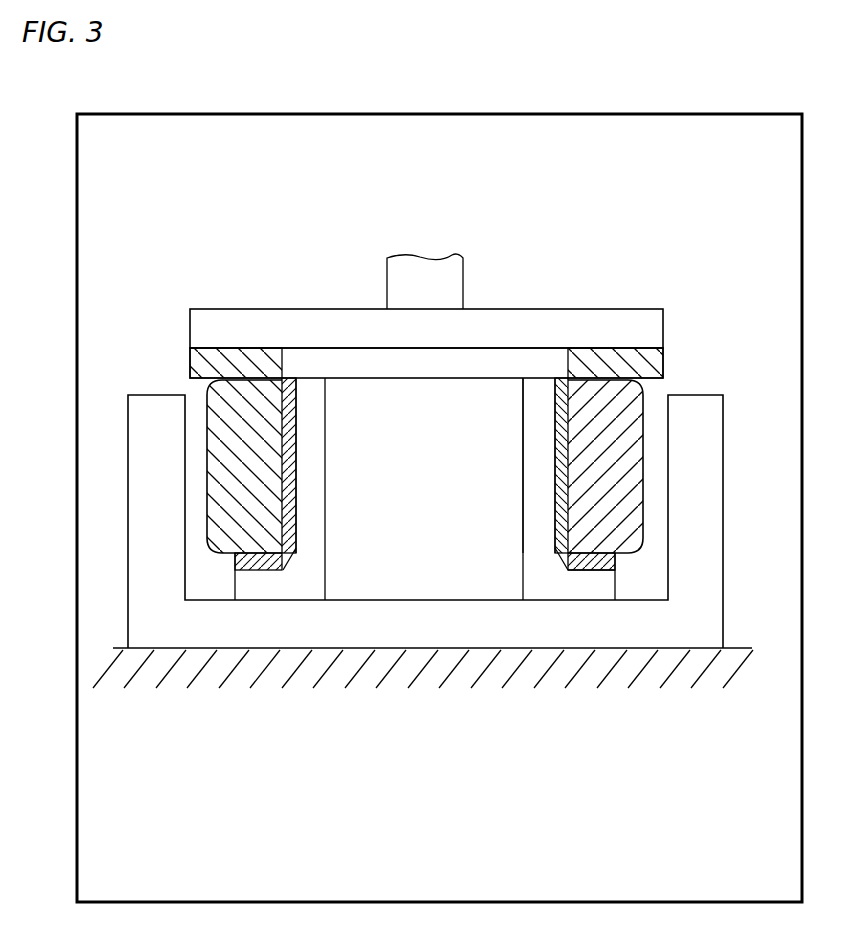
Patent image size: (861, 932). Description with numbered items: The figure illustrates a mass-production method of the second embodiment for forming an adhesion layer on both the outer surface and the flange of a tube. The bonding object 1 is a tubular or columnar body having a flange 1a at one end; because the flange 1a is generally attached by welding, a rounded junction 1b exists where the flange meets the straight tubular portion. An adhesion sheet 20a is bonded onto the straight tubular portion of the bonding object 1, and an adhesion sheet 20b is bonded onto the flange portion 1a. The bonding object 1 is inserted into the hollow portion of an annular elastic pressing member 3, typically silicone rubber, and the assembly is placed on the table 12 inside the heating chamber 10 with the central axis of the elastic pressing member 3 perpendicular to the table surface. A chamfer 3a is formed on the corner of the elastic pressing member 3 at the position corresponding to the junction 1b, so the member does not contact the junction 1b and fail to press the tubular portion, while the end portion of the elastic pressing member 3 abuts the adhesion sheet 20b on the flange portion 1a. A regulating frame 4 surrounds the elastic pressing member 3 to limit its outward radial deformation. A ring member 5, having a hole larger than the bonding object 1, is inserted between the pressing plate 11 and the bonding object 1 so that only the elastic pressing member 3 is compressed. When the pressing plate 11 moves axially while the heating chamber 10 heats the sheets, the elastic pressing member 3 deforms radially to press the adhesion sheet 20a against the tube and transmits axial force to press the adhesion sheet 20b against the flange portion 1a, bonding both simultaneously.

The bonding object 1 is at (540, 572).
The flange 1a is at (248, 585).
The junction 1b is at (287, 552).
The elastic pressing member 3 is at (625, 495).
The chamfer 3a is at (278, 555).
The regulating frame 4 is at (693, 412).
The ring member 5 is at (653, 357).
The heating chamber 10 is at (527, 114).
The pressing plate 11 is at (527, 316).
The table 12 is at (678, 648).
The adhesion sheet 20a is at (555, 522).
The adhesion sheet 20b is at (585, 573).